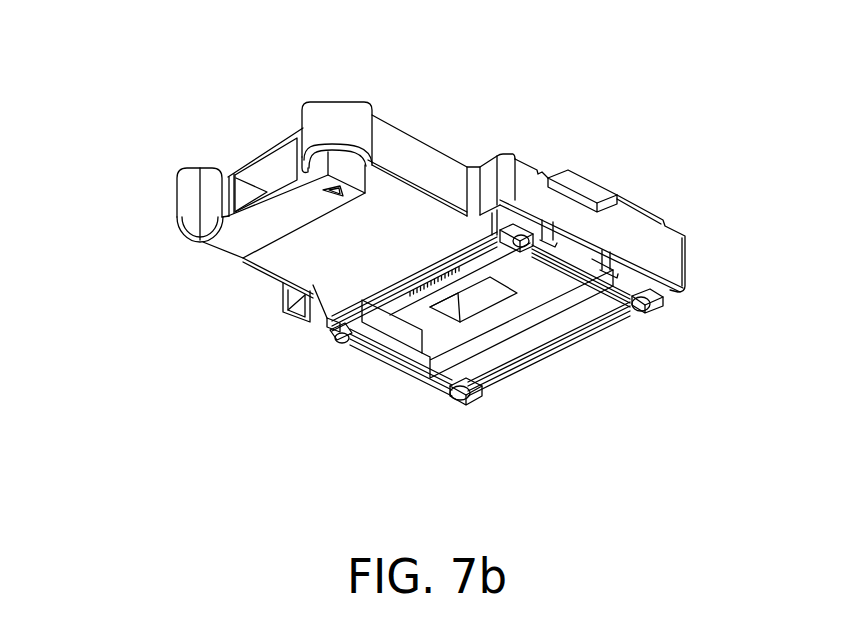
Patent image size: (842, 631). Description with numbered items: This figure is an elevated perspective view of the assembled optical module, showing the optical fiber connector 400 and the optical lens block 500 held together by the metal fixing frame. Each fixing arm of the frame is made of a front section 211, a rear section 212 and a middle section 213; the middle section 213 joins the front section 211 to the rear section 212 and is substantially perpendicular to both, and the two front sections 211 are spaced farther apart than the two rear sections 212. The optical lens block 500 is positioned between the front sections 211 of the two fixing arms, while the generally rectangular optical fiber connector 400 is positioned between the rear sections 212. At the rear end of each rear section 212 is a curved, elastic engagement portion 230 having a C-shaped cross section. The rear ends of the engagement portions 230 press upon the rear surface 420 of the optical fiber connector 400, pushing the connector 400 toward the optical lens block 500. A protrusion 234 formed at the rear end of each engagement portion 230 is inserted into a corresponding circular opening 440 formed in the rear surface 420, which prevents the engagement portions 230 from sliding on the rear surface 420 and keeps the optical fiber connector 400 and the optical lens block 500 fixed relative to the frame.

The front section 211 is at (624, 231).
The rear section 212 is at (445, 165).
The middle section 213 is at (488, 180).
The engagement portion 230 is at (332, 116).
The protrusion 234 is at (228, 192).
The optical fiber connector 400 is at (340, 273).
The rear surface 420 is at (240, 215).
The circular opening 440 is at (233, 192).
The optical lens block 500 is at (582, 317).